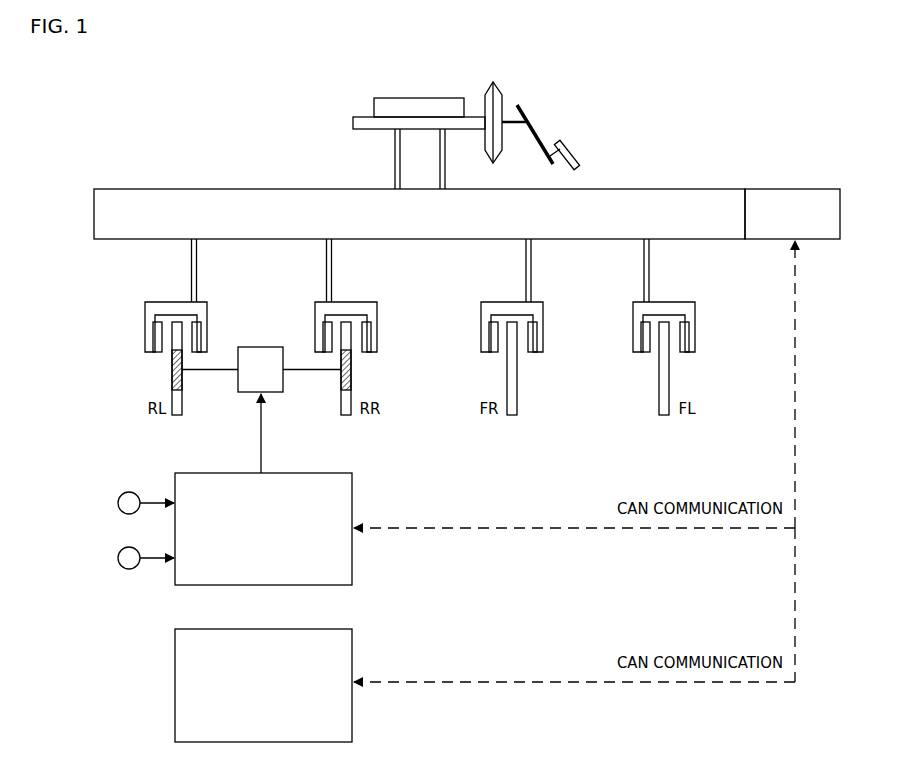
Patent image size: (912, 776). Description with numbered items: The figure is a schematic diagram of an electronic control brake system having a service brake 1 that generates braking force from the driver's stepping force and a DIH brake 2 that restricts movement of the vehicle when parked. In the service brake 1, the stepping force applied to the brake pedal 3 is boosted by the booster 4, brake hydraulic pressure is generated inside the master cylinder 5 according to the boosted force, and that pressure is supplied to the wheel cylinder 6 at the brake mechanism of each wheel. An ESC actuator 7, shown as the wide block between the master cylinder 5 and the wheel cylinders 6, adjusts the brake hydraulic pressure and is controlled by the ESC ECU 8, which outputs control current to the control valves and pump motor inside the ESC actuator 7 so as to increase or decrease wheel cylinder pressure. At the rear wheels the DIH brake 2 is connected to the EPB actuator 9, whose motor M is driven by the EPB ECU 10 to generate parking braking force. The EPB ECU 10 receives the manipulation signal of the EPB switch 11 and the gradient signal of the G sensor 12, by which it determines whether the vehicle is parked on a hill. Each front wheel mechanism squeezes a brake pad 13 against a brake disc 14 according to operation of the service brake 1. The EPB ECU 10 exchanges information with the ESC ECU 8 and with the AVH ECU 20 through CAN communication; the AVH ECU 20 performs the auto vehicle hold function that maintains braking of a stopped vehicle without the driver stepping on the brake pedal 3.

The service brake 1 is at (556, 112).
The DIH brake 2 is at (172, 377).
The brake pedal 3 is at (568, 145).
The booster 4 is at (498, 85).
The master cylinder 5 is at (357, 117).
The wheel cylinder 6 is at (197, 298).
The ESC actuator 7 is at (713, 189).
The ESC ECU 8 is at (818, 189).
The EPB actuator 9 is at (262, 335).
The EPB ECU 10 is at (320, 473).
The EPB switch 11 is at (128, 491).
The G sensor 12 is at (129, 570).
The brake pad 13 is at (155, 353).
The brake disc 14 is at (182, 398).
The AVH ECU 20 is at (320, 628).